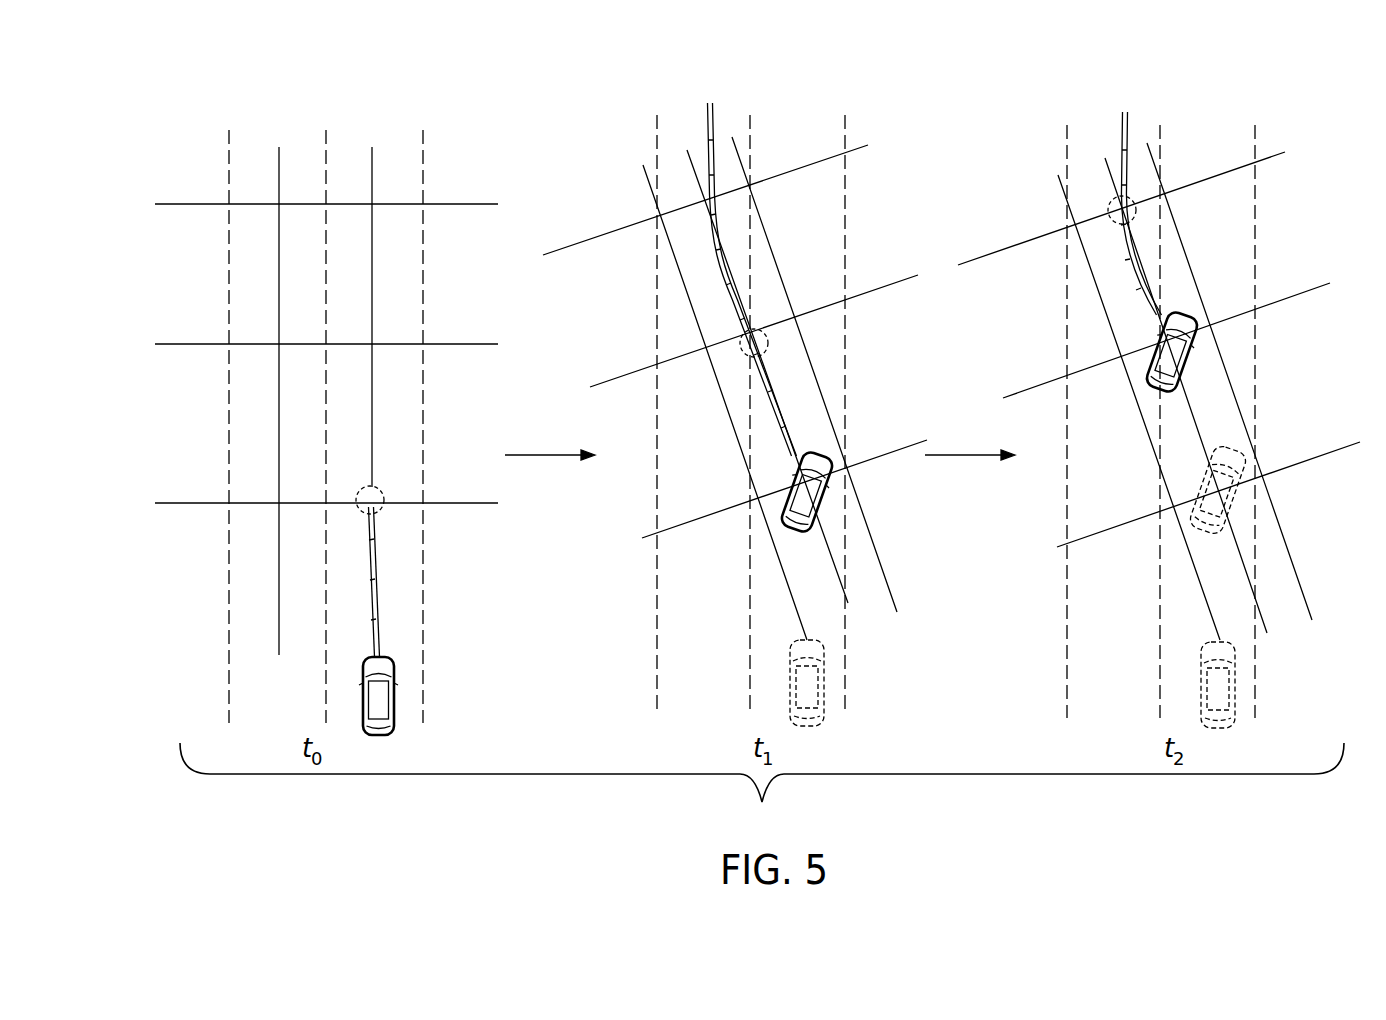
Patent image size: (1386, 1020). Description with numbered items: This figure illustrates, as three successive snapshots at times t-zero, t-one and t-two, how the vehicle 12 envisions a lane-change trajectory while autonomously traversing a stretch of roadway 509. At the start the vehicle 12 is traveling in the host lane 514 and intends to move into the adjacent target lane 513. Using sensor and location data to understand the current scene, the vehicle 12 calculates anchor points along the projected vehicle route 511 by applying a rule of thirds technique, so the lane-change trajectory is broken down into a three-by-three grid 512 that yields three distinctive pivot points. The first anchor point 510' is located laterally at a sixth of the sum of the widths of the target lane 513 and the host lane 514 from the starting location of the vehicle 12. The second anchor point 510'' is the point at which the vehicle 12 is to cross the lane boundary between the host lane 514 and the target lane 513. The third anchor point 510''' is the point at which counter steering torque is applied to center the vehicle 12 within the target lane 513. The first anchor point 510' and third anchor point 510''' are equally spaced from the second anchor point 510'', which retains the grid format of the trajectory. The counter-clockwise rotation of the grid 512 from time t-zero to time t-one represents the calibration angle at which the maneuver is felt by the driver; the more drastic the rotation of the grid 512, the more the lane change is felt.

The vehicle 12 is at (395, 702).
The roadway 509 is at (216, 621).
The first anchor point 510' is at (425, 514).
The second anchor point 510'' is at (809, 357).
The third anchor point 510''' is at (1092, 169).
The projected vehicle route 511 is at (159, 267).
The grid 512 is at (464, 190).
The target lane 513 is at (282, 134).
The host lane 514 is at (375, 134).